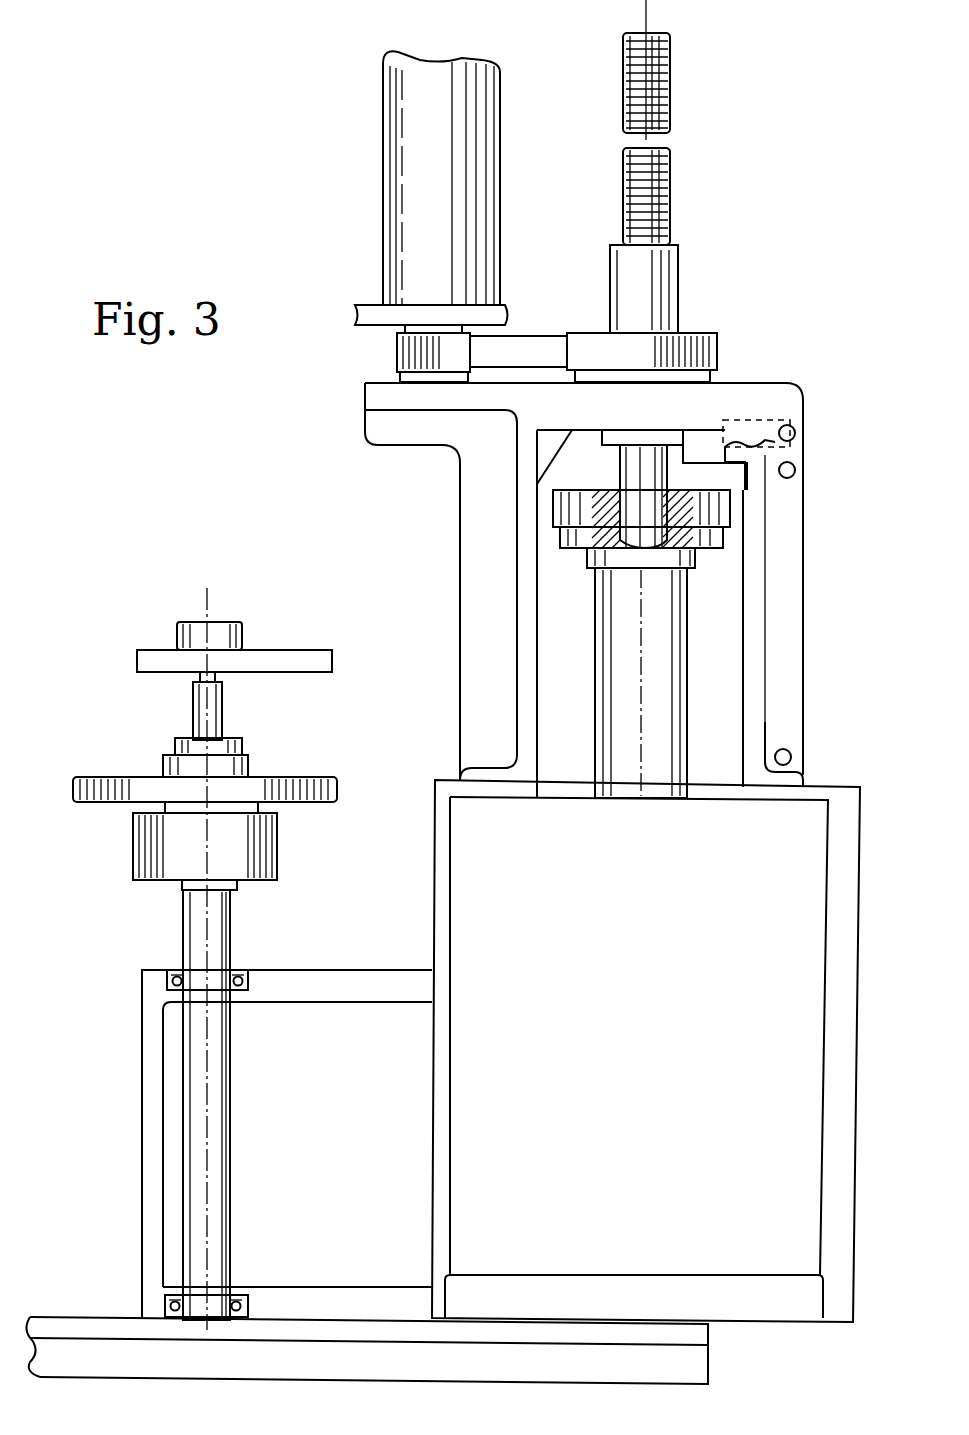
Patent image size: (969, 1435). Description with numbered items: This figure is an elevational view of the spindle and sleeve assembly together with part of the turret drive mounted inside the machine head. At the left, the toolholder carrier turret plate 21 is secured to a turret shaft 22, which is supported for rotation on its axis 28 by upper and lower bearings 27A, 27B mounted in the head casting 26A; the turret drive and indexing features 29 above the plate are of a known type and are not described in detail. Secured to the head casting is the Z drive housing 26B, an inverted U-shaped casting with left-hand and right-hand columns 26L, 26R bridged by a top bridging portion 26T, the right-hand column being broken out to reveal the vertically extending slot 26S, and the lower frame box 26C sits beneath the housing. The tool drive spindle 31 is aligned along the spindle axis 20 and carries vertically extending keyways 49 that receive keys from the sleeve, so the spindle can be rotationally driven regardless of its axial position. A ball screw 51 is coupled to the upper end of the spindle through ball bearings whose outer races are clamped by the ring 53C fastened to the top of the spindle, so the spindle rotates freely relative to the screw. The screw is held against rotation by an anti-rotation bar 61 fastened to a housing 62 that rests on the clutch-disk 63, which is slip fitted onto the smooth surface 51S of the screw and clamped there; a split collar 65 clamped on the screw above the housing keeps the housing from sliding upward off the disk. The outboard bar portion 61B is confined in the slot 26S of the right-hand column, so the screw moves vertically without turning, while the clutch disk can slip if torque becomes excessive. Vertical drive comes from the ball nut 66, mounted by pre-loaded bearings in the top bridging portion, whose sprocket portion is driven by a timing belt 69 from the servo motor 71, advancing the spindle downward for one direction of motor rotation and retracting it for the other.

The spindle axis 20 is at (650, 8).
The toolholder carrier turret plate 21 is at (75, 1362).
The turret shaft 22 is at (183, 1123).
The head casting 26A is at (155, 1055).
The Z drive housing 26B is at (345, 483).
The frame box 26C is at (780, 693).
The left-hand column 26L is at (522, 643).
The right-hand column 26R is at (750, 738).
The vertically extending slot 26S is at (753, 470).
The top bridging portion 26T is at (728, 395).
The upper bearing 27A is at (172, 968).
The lower bearing 27B is at (165, 1300).
The axis 28 is at (205, 588).
The turret drive and indexing features 29 is at (145, 712).
The tool drive spindle 31 is at (687, 613).
The keyways 49 is at (647, 663).
The ball screw 51 is at (673, 173).
The smooth surface 51S is at (640, 505).
The ring 53C is at (587, 562).
The anti-rotation bar 61 is at (735, 447).
The outboard bar portion 61B is at (758, 445).
The housing 62 is at (728, 507).
The clutch disk 63 is at (720, 538).
The split collar 65 is at (630, 477).
The ball nut 66 is at (680, 283).
The timing belt 69 is at (528, 345).
The servo motor 71 is at (418, 152).